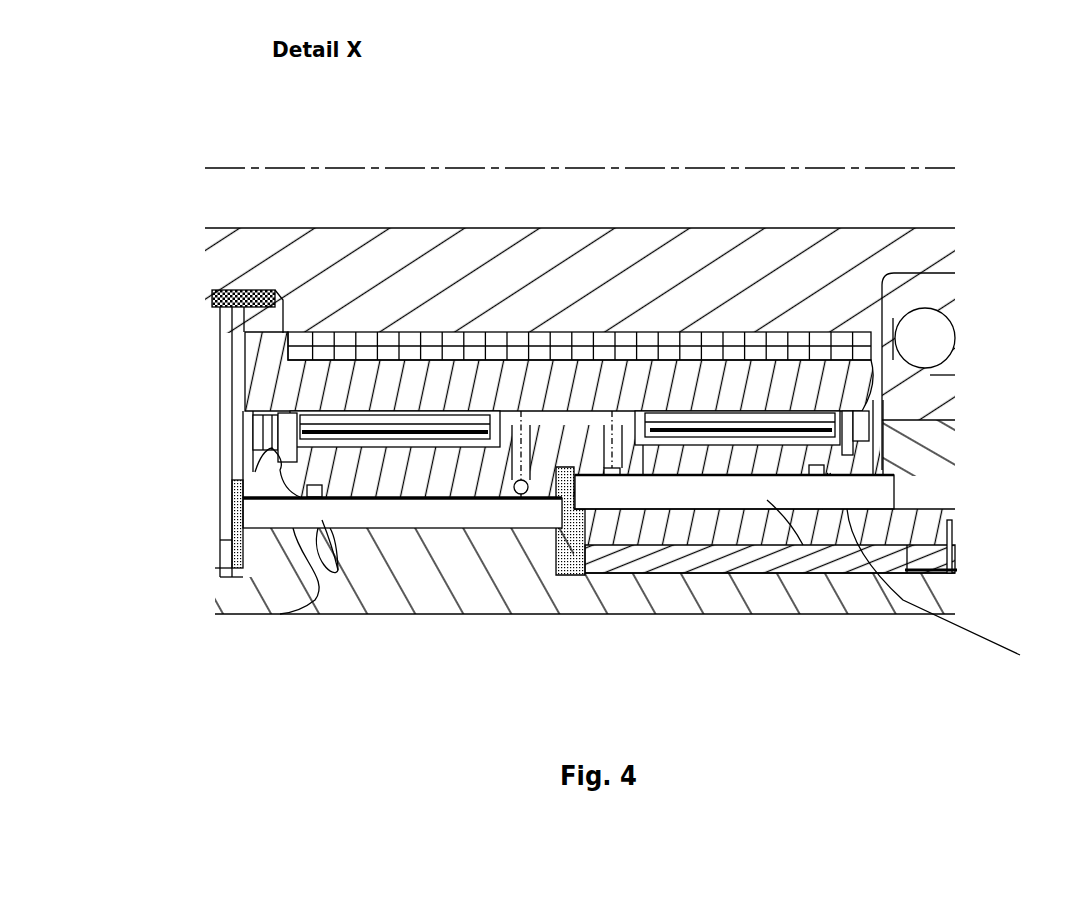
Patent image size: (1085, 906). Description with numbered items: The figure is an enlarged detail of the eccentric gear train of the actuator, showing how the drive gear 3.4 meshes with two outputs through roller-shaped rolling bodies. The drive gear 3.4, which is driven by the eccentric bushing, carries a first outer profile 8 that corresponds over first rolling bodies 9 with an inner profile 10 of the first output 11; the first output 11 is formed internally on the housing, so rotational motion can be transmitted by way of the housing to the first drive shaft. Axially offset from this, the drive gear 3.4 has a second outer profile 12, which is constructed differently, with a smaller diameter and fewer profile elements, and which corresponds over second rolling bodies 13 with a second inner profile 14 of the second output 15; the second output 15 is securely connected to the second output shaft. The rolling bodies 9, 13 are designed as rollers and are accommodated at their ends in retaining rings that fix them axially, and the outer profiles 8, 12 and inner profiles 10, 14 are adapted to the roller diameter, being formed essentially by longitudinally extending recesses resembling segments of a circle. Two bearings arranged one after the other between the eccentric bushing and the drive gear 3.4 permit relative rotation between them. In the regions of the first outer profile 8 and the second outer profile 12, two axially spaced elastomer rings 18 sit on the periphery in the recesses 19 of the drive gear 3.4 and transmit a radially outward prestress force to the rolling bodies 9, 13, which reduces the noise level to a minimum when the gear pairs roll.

The drive gear 3.4 is at (273, 480).
The first outer profile 8 is at (223, 517).
The first rolling bodies 9 is at (455, 515).
The inner profile 10 is at (338, 570).
The first output 11 is at (277, 562).
The second outer profile 12 is at (894, 487).
The second rolling bodies 13 is at (645, 491).
The second inner profile 14 is at (787, 500).
The second output 15 is at (871, 527).
The elastomer rings 18 is at (817, 472).
The recesses 19 is at (297, 610).